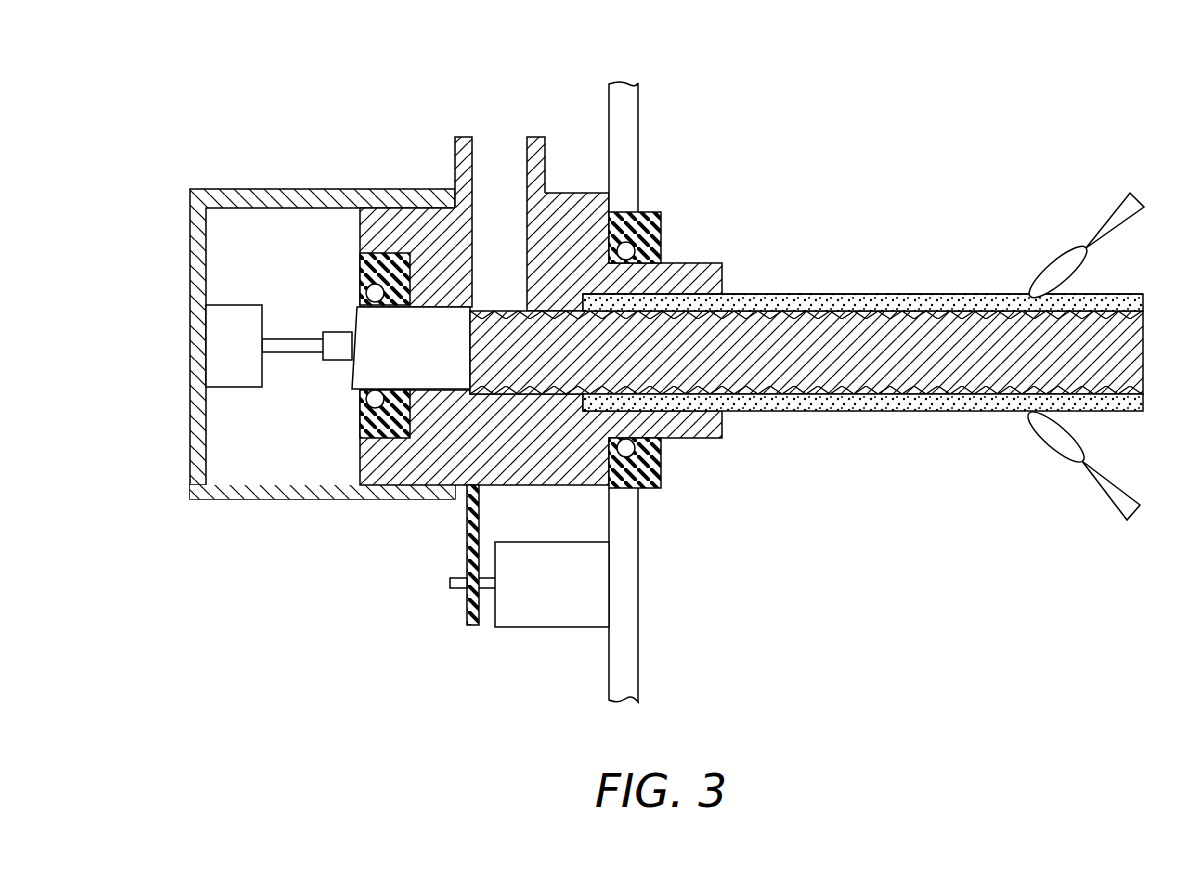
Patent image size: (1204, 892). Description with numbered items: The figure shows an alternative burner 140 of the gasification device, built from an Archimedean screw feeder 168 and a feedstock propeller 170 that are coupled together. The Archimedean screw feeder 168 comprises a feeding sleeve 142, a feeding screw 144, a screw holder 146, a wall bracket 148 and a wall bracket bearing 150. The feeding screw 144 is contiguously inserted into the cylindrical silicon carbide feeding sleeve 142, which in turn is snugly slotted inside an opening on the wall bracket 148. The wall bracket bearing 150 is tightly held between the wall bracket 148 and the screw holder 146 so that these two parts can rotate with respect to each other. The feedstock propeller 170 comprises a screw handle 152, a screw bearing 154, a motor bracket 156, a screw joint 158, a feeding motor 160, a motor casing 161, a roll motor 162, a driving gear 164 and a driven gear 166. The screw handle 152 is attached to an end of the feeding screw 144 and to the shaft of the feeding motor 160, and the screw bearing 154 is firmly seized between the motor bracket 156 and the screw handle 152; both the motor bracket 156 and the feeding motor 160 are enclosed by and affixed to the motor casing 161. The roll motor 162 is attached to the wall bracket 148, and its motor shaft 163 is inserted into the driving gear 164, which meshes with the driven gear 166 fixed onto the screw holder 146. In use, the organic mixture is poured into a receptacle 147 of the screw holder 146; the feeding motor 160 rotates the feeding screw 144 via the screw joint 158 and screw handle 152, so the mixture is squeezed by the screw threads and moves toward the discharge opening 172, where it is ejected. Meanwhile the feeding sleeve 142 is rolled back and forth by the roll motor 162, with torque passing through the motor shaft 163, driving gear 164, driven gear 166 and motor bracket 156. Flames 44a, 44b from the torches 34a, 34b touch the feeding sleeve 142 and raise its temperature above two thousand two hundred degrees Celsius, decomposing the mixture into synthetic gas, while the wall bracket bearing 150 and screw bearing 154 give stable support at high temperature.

The alternative burner 140 is at (1106, 128).
The feeding sleeve 142 is at (925, 294).
The feeding screw 144 is at (1145, 354).
The screw holder 146 is at (585, 193).
The receptacle 147 is at (527, 160).
The wall bracket 148 is at (637, 136).
The wall bracket bearing 150 is at (640, 212).
The screw handle 152 is at (392, 360).
The screw bearing 154 is at (362, 272).
The motor bracket 156 is at (456, 170).
The screw joint 158 is at (293, 338).
The feeding motor 160 is at (216, 357).
The motor casing 161 is at (280, 500).
The roll motor 162 is at (534, 594).
The motor shaft 163 is at (487, 590).
The driving gear 164 is at (452, 581).
The driven gear 166 is at (465, 544).
The Archimedean screw feeder 168 is at (823, 290).
The feedstock propeller 170 is at (232, 187).
The discharge opening 172 is at (1145, 402).
The torch 34a is at (1108, 214).
The torch 34b is at (1108, 497).
The flame 44a is at (1048, 274).
The flame 44b is at (1050, 440).